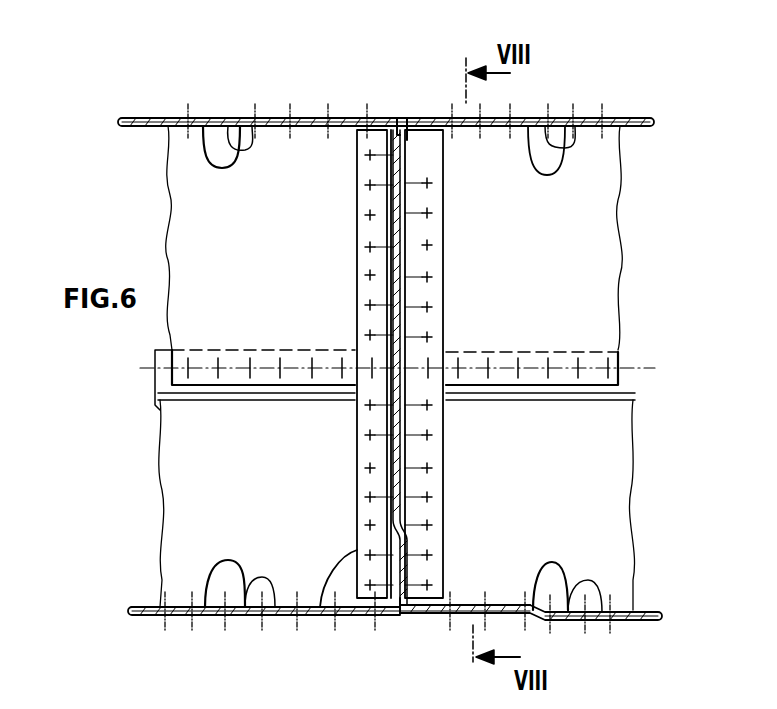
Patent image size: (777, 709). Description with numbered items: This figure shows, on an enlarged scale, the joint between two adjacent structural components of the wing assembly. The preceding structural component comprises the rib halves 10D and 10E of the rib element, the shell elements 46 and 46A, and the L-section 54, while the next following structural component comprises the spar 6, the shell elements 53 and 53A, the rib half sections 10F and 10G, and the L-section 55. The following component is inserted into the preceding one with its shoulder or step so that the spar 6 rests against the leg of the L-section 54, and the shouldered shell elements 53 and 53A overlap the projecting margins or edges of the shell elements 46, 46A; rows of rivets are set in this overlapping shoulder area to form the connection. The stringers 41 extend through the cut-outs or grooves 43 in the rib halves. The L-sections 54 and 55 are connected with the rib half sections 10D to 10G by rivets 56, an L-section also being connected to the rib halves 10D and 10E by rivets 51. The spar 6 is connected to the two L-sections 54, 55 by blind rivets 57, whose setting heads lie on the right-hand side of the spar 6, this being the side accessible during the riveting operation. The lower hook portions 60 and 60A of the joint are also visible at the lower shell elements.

The spar 6 is at (393, 197).
The rib half 10D is at (178, 205).
The rib half 10E is at (185, 476).
The rib half section 10F is at (610, 204).
The rib half section 10G is at (622, 474).
The stringer 41 is at (210, 126).
The cut-out or groove 43 is at (242, 126).
The shell element 46 is at (222, 126).
The shell element 46A is at (160, 615).
The rivet 51 is at (443, 548).
The shell element 53 is at (640, 118).
The shell element 53A is at (648, 612).
The L-section 54 is at (328, 607).
The L-section 55 is at (443, 268).
The rivet 56 is at (366, 215).
The blind rivet 57 is at (372, 128).
The hook strip 60 is at (405, 120).
The hook strip 60A is at (412, 574).